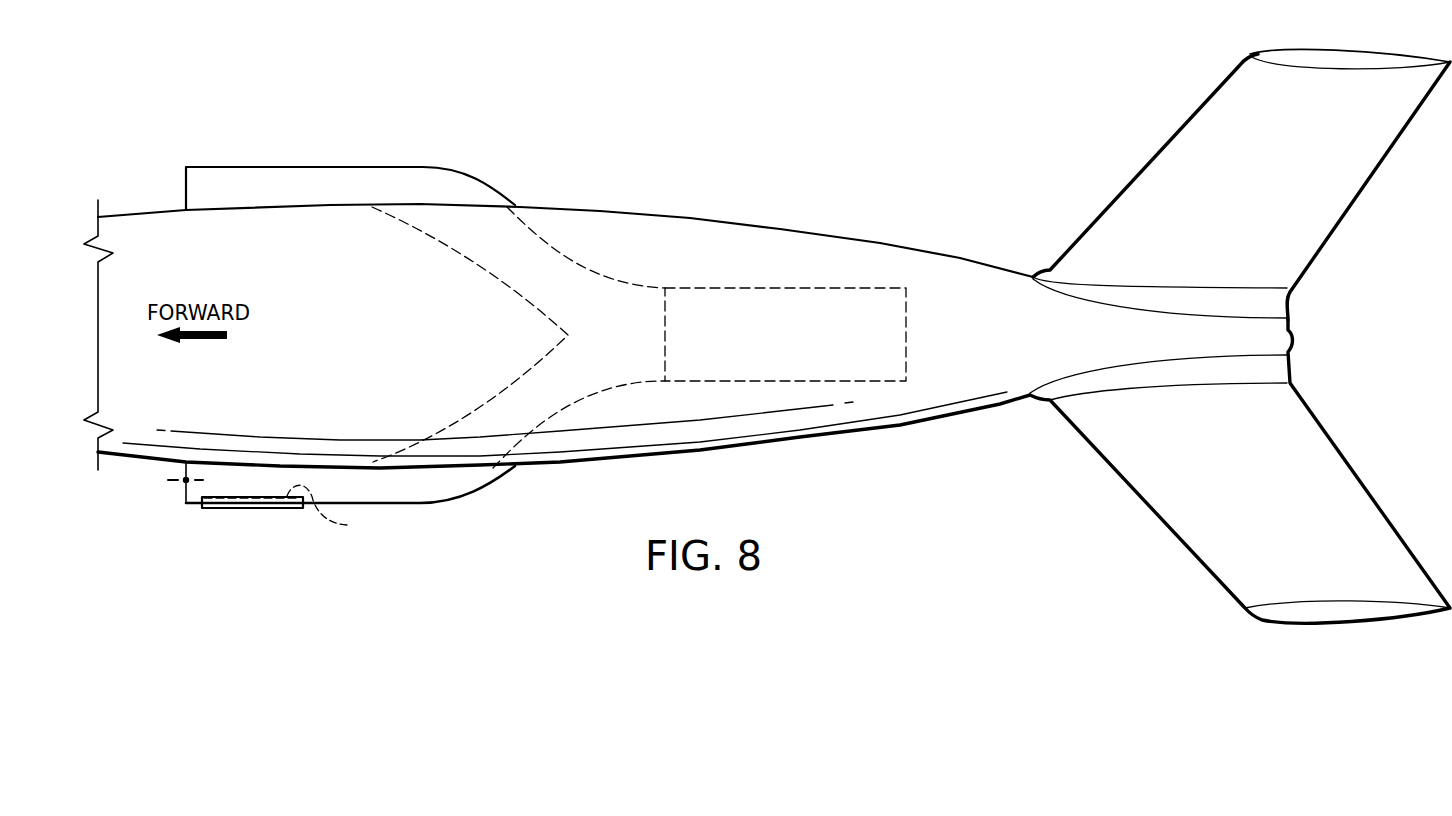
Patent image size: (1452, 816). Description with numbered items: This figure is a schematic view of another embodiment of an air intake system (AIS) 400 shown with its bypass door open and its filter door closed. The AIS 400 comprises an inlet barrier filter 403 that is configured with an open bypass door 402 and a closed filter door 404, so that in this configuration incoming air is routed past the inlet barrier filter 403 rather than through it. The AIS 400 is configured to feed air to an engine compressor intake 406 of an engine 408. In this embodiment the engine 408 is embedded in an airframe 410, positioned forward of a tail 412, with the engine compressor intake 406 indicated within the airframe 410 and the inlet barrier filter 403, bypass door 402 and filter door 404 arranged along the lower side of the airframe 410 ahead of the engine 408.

The air intake system 400 is at (767, 336).
The bypass door 402 is at (180, 482).
The inlet barrier filter 403 is at (252, 511).
The filter door 404 is at (341, 513).
The engine compressor intake 406 is at (668, 337).
The engine 408 is at (710, 288).
The airframe 410 is at (877, 243).
The tail 412 is at (1152, 160).